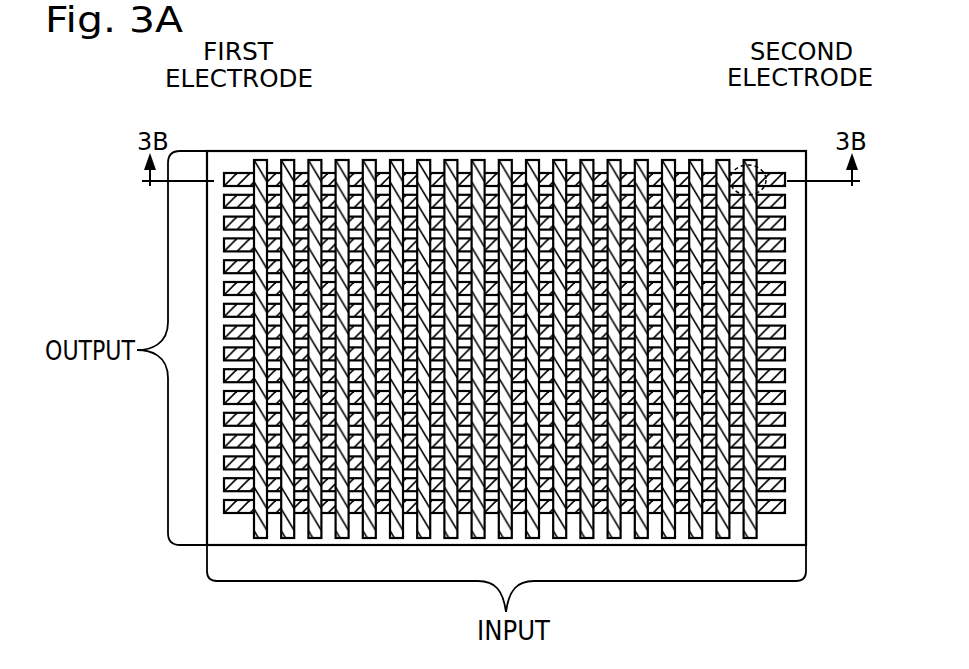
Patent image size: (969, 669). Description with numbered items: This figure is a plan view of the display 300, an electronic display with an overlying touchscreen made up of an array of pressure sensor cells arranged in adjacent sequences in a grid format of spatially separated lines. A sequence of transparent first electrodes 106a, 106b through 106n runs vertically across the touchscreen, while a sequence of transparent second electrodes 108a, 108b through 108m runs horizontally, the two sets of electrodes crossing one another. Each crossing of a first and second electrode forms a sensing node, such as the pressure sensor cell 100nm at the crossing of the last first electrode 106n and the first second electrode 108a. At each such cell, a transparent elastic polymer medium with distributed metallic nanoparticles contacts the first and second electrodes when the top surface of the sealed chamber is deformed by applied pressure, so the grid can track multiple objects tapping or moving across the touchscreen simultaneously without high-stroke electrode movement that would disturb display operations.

The display 300 is at (652, 50).
The first electrode 106a is at (261, 163).
The first electrode 106b is at (288, 163).
The first electrode 106n is at (750, 163).
The second electrode 108a is at (770, 174).
The second electrode 108b is at (787, 205).
The second electrode 108m is at (786, 508).
The pressure sensor cell 100nm is at (727, 168).